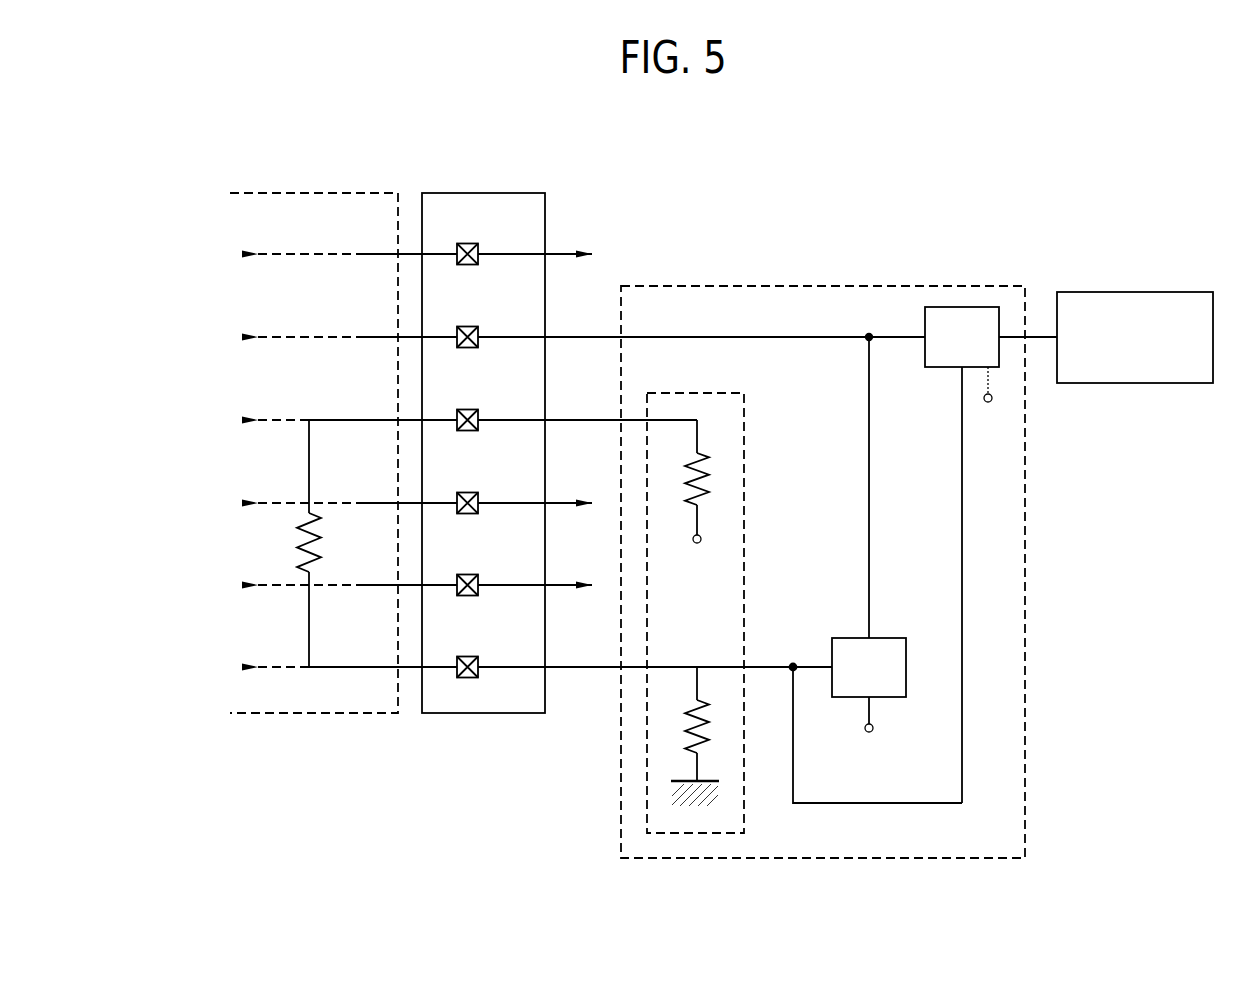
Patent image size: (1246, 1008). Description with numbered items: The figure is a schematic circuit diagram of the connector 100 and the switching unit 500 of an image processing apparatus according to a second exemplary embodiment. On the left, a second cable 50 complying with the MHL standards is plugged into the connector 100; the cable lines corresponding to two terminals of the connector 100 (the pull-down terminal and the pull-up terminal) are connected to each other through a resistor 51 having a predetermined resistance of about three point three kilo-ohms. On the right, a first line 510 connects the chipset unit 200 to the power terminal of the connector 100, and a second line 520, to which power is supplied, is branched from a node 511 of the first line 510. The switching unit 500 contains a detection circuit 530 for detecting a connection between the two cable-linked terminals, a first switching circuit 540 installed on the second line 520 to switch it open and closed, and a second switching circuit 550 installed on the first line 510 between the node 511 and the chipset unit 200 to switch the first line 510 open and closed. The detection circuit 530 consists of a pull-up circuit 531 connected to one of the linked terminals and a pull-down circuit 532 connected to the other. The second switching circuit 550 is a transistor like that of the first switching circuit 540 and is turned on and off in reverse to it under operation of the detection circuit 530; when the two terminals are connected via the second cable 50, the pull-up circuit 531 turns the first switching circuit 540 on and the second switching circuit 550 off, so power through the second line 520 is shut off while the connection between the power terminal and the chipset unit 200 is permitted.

The second cable 50 is at (310, 193).
The resistor 51 is at (282, 546).
The connector 100 is at (549, 180).
The chipset unit 200 is at (1133, 292).
The switching unit 500 is at (687, 286).
The first line 510 is at (791, 337).
The node 511 is at (866, 337).
The second line 520 is at (869, 566).
The detection circuit 530 is at (647, 828).
The pull-up circuit 531 is at (716, 476).
The pull-down circuit 532 is at (675, 738).
The first switching circuit 540 is at (906, 668).
The second switching circuit 550 is at (958, 307).